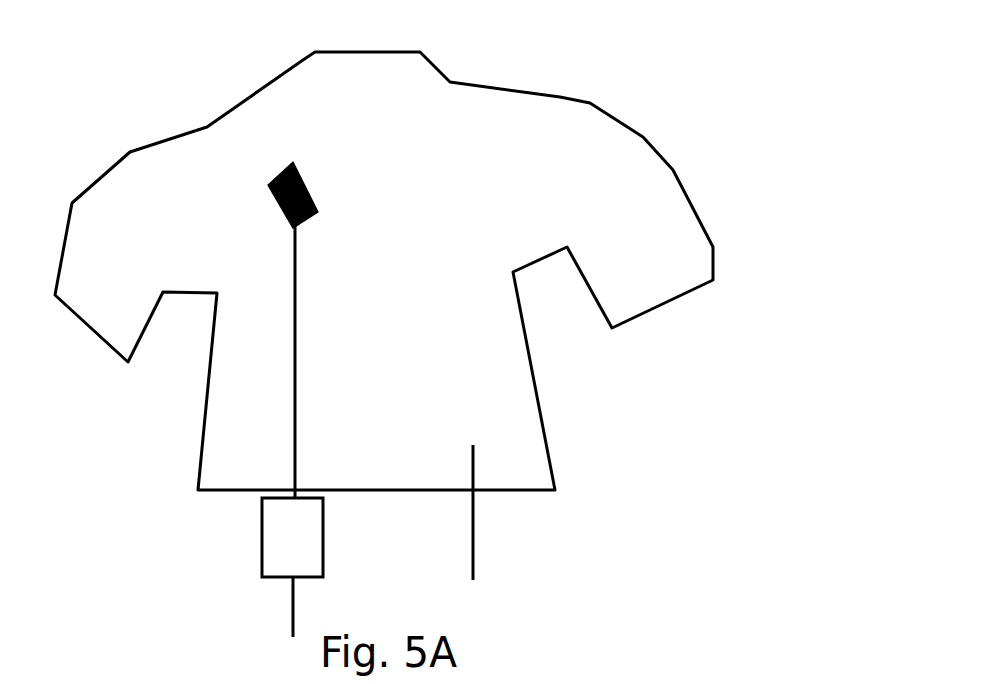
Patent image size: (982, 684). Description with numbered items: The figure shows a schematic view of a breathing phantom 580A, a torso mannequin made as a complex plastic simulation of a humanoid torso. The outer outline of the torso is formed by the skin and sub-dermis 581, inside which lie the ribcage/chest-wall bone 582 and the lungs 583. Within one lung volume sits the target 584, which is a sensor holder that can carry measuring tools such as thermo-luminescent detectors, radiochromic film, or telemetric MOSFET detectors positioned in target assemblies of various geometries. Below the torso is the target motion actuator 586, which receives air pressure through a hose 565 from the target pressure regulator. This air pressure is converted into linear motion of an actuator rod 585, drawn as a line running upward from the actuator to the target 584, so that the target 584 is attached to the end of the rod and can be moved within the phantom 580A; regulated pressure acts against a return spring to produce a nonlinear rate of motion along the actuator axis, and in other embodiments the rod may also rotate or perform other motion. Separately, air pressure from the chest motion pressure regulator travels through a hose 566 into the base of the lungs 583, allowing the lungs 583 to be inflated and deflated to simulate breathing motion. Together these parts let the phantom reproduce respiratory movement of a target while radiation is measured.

The breathing phantom 580A is at (445, 73).
The skin and sub-dermis 581 is at (210, 140).
The ribcage/chest-wall bone 582 is at (485, 177).
The lungs 583 is at (452, 252).
The target 584 is at (277, 205).
The actuator rod 585 is at (293, 408).
The target motion actuator 586 is at (282, 541).
The hose 566 is at (473, 532).
The hose 565 is at (290, 605).